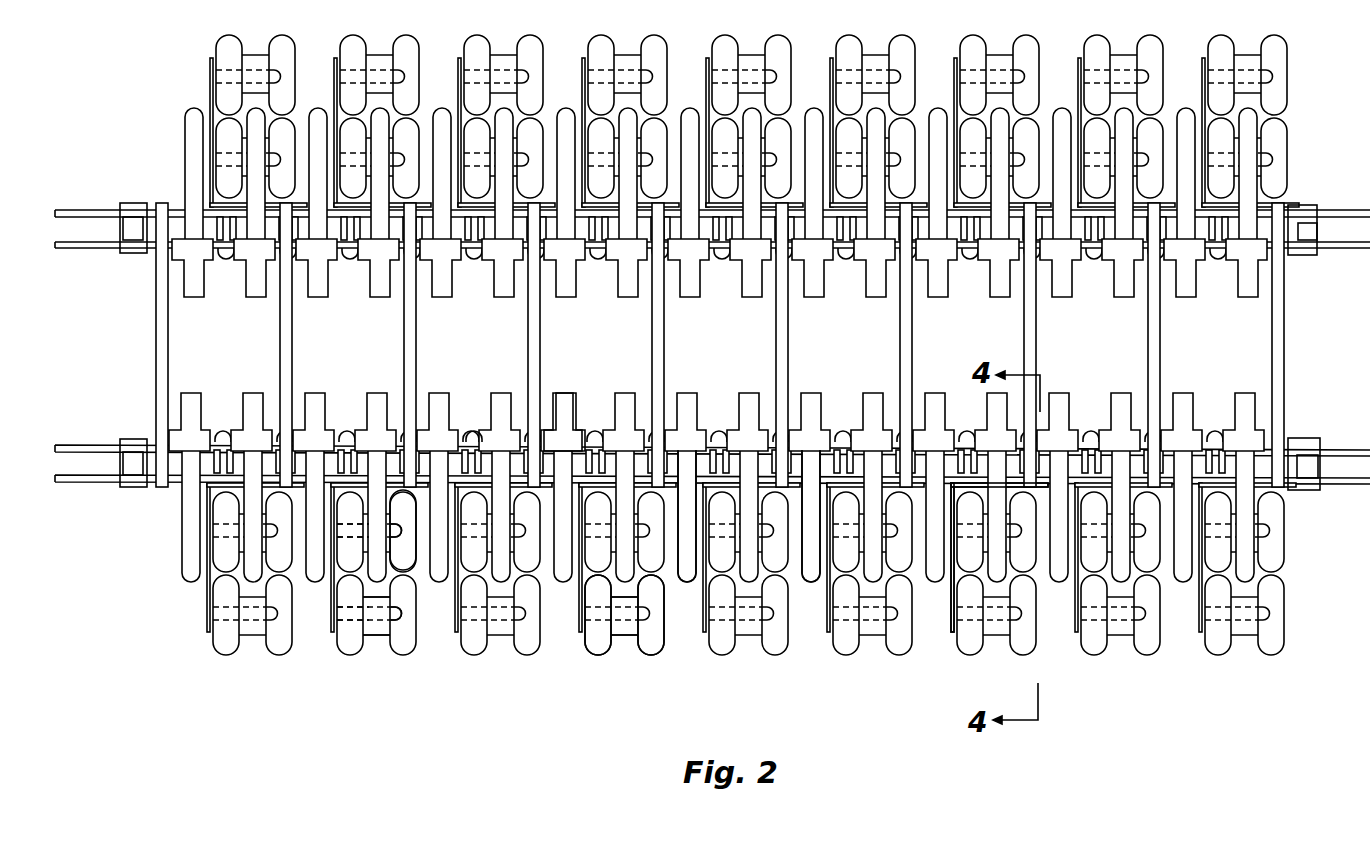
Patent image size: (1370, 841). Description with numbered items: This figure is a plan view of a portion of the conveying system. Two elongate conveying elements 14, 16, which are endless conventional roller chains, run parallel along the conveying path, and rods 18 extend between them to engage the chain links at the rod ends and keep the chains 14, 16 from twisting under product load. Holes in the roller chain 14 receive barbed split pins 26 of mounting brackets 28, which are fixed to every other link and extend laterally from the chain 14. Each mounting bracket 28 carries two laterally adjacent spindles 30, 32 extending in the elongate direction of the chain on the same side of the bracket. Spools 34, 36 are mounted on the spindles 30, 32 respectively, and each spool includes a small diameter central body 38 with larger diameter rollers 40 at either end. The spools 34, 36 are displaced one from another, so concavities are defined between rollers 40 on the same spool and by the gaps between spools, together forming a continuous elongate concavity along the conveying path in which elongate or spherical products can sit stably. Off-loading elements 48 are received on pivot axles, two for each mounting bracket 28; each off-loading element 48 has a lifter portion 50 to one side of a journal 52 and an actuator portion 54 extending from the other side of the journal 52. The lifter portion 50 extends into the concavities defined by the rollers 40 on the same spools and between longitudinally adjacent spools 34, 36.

The elongate conveying element 14 is at (1292, 438).
The elongate conveying element 16 is at (1318, 212).
The rod 18 is at (155, 352).
The barbed split pin 26 is at (470, 434).
The mounting bracket 28 is at (948, 612).
The spindle 30 is at (340, 532).
The spindle 32 is at (347, 621).
The spool 34 is at (407, 560).
The spool 36 is at (375, 636).
The central body 38 is at (623, 641).
The roller 40 is at (588, 654).
The off-loading element 48 is at (810, 583).
The lifter portion 50 is at (685, 583).
The journal 52 is at (665, 416).
The actuator portion 54 is at (560, 394).